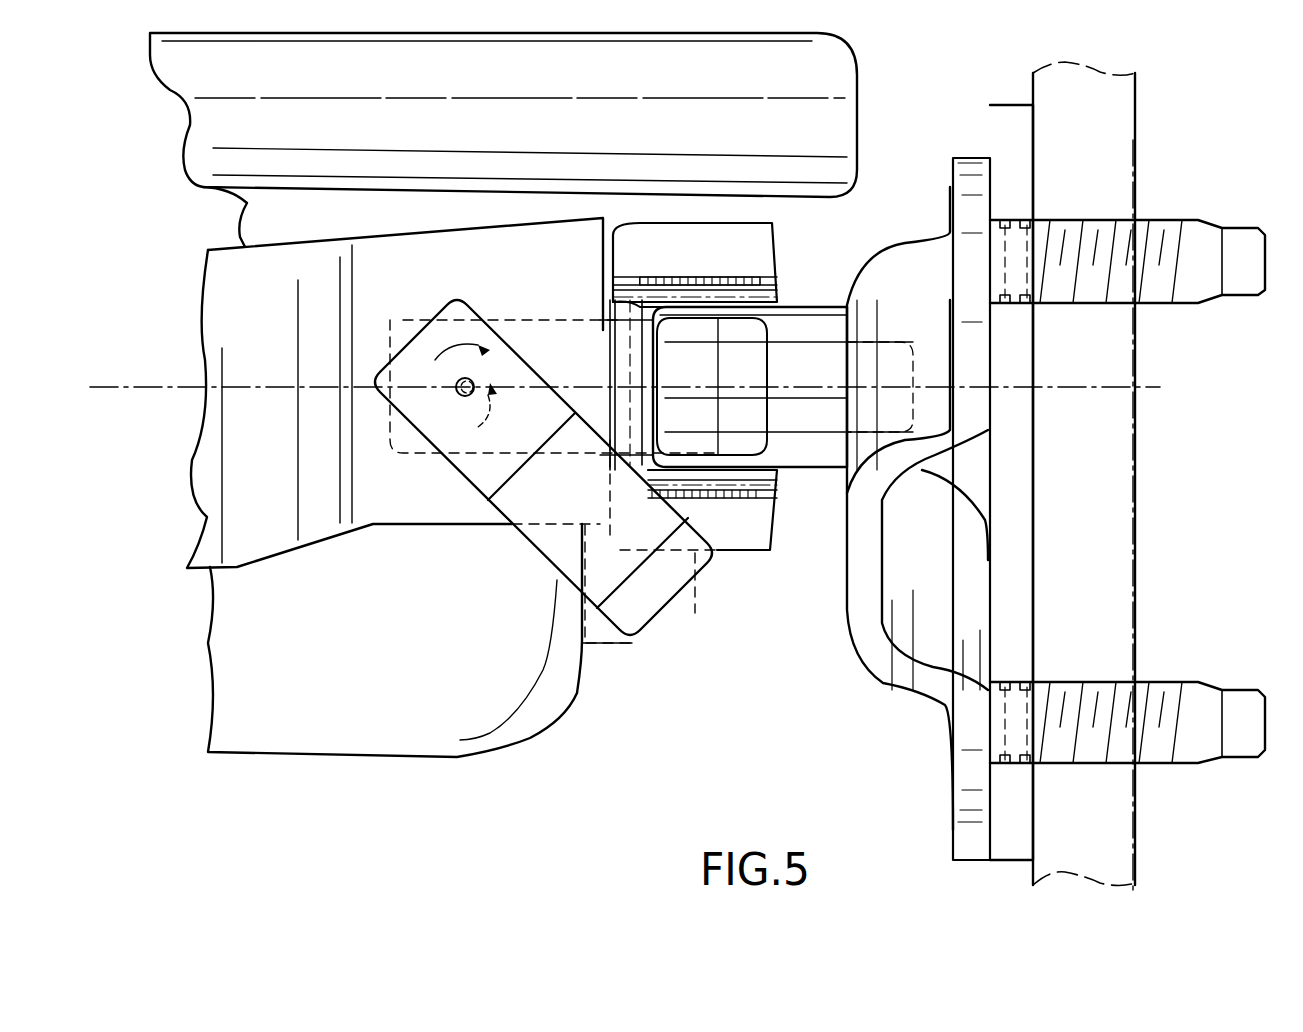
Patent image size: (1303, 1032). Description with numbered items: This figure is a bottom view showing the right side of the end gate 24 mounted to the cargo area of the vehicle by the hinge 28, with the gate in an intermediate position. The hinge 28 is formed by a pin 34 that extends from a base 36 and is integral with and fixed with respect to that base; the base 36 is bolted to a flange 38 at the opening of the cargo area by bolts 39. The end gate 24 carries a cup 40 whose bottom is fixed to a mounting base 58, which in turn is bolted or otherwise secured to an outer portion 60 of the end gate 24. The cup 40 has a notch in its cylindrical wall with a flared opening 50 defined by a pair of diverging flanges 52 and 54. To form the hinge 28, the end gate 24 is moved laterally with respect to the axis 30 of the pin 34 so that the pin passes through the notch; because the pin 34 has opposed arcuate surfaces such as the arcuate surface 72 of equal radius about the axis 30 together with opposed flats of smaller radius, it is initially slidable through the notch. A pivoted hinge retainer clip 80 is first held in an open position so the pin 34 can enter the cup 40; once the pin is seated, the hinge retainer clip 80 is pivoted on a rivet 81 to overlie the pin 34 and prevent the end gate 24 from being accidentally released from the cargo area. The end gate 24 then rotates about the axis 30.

The end gate 24 is at (870, 63).
The hinge 28 is at (805, 590).
The axis 30 is at (1150, 387).
The pin 34 is at (805, 450).
The base 36 is at (900, 687).
The flange 38 is at (1010, 582).
The bolts 39 is at (1175, 230).
The cup 40 is at (778, 245).
The flared opening 50 is at (760, 303).
The diverging flange 52 is at (718, 278).
The diverging flange 54 is at (745, 500).
The mounting base 58 is at (262, 530).
The outer portion 60 is at (287, 733).
The arcuate surface 72 is at (760, 378).
The hinge retainer clip 80 is at (638, 612).
The rivet 81 is at (463, 395).